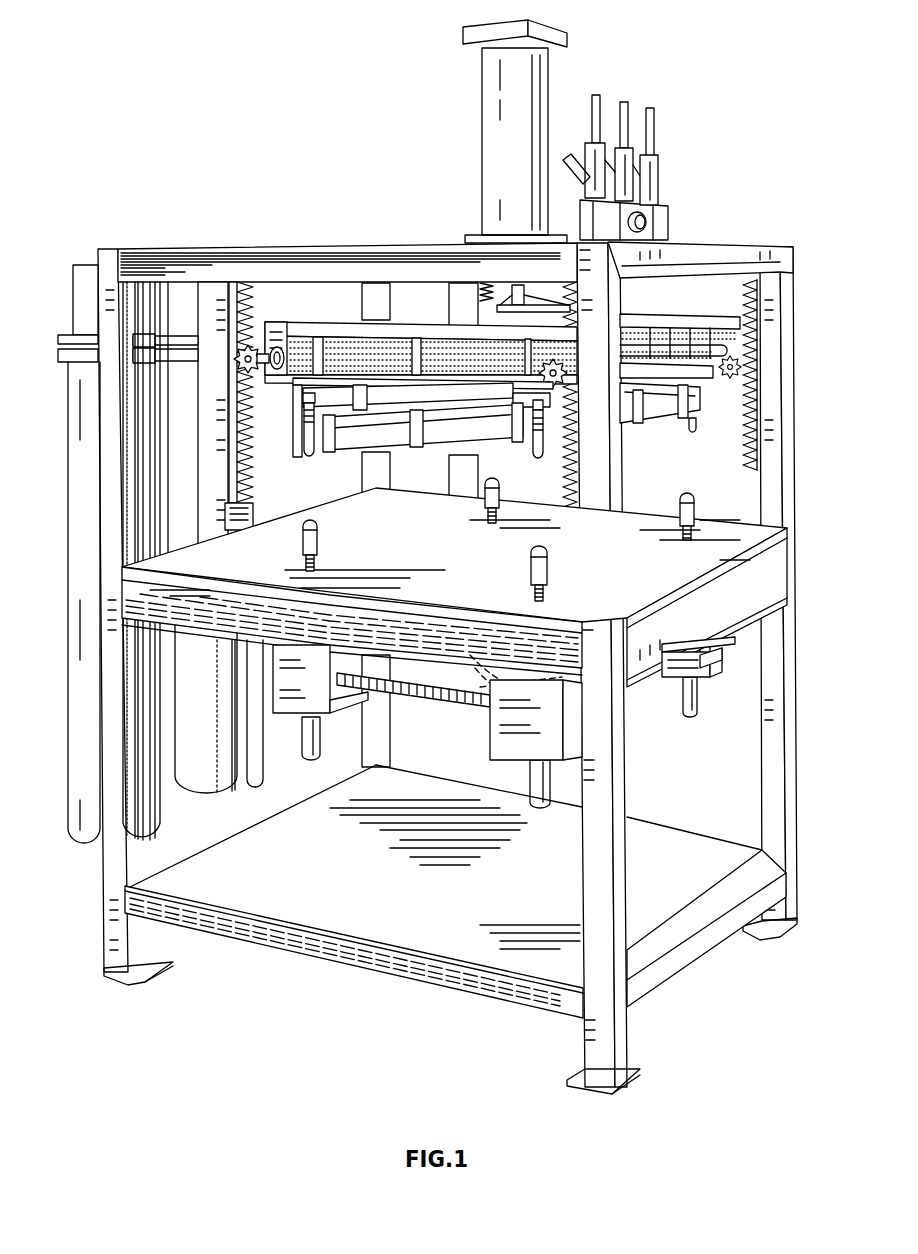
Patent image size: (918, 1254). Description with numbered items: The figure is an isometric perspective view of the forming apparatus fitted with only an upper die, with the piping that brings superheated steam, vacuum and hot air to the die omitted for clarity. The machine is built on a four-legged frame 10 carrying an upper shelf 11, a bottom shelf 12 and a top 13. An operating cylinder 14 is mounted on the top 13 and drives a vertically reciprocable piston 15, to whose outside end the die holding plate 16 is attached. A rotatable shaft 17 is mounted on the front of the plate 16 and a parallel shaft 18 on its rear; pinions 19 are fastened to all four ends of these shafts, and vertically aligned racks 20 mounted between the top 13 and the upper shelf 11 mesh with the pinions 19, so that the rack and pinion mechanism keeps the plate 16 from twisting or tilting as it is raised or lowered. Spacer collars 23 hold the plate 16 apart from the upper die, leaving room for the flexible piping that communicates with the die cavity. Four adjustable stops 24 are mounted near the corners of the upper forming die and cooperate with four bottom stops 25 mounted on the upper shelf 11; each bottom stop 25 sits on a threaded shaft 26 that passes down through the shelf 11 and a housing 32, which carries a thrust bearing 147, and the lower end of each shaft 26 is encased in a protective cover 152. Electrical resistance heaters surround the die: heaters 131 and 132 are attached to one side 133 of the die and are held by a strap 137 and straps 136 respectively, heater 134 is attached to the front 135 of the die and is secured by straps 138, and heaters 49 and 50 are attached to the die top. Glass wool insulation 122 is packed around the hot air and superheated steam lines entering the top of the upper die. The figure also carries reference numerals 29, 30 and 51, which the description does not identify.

The frame 10 is at (790, 430).
The upper shelf 11 is at (745, 552).
The bottom shelf 12 is at (700, 943).
The top 13 is at (728, 246).
The operating cylinder 14 is at (482, 86).
The piston 15 is at (535, 278).
The die holding plate 16 is at (348, 322).
The rotatable shaft 17 is at (668, 352).
The parallel shaft 18 is at (297, 350).
The pinions 19 is at (237, 357).
The racks 20 is at (233, 462).
The spacer collars 23 is at (328, 345).
The adjustable stops 24 is at (308, 437).
The bottom stops 25 is at (318, 524).
The threaded shaft 26 is at (316, 562).
The drive path 29 is at (510, 670).
The drive rack 30 is at (425, 695).
The housing 32 is at (293, 697).
The electrical heater 49 is at (83, 803).
The electrical heater 50 is at (215, 777).
The valve block 51 is at (660, 200).
The glass wool insulation 122 is at (448, 346).
The electrical heater 131 is at (368, 397).
The electrical heater 132 is at (467, 428).
The side of die 133 is at (293, 418).
The electrical heater 134 is at (700, 397).
The front of die 135 is at (700, 386).
The straps 136 is at (417, 428).
The strap 137 is at (362, 408).
The straps 138 is at (667, 402).
The thrust bearing 147 is at (708, 680).
The protective cover 152 is at (323, 743).